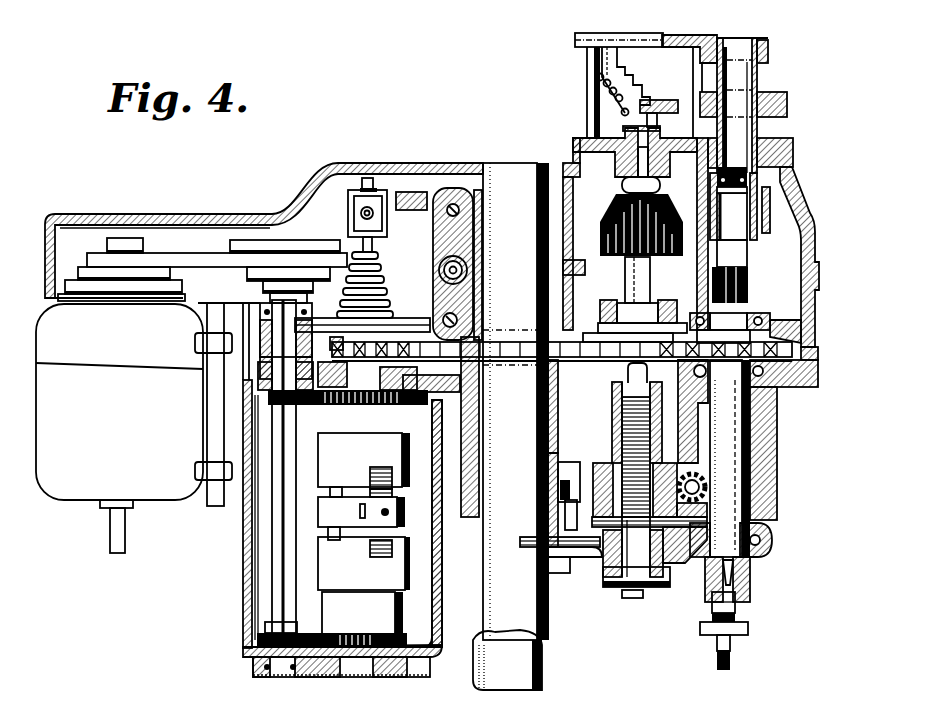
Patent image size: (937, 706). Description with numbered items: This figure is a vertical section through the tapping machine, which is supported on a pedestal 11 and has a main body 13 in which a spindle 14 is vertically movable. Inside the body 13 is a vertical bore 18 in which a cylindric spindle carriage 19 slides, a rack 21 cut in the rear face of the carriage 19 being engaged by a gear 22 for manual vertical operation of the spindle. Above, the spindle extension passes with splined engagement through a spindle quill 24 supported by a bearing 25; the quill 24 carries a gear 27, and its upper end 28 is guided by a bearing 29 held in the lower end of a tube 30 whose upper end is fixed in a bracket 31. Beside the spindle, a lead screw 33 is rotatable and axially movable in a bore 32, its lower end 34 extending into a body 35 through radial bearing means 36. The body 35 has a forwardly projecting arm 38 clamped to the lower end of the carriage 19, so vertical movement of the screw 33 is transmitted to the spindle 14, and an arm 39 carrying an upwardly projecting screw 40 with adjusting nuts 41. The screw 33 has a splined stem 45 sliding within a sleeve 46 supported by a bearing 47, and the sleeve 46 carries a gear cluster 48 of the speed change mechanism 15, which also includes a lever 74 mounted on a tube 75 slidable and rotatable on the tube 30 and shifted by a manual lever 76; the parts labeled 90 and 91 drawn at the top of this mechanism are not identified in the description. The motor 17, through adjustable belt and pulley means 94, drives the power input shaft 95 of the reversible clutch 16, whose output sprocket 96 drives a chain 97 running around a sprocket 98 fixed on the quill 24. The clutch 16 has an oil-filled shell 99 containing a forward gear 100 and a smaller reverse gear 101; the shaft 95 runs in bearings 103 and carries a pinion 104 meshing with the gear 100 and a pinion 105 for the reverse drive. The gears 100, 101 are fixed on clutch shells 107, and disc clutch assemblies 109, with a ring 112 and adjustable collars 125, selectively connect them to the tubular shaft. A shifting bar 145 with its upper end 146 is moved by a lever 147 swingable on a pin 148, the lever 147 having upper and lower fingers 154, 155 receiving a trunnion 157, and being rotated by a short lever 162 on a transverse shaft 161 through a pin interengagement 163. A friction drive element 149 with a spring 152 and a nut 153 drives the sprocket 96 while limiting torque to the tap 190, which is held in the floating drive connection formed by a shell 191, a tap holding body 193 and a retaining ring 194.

The pedestal 11 is at (548, 640).
The main body 13 is at (777, 474).
The spindle 14 is at (760, 568).
The speed change mechanism 15 is at (572, 137).
The reversible clutch 16 is at (232, 527).
The motor 17 is at (119, 428).
The vertical bore 18 is at (592, 196).
The spindle carriage 19 is at (736, 468).
The rack 21 is at (700, 440).
The gear 22 is at (690, 472).
The spindle quill 24 is at (750, 311).
The bearing 25 is at (768, 318).
The gear 27 is at (750, 280).
The upper end of the quill 28 is at (656, 192).
The bearing 29 is at (721, 177).
The tube 30 is at (757, 72).
The bracket 31 is at (766, 37).
The bore 32 is at (612, 399).
The lead screw 33 is at (613, 422).
The lower end of the lead screw 34 is at (627, 563).
The body 35 is at (612, 574).
The radial bearing means 36 is at (607, 569).
The forwardly projecting arm 38 is at (764, 537).
The arm 39 is at (535, 554).
The screw 40 is at (540, 492).
The adjusting nuts 41 is at (540, 512).
The splined stem 45 is at (651, 289).
The sleeve 46 is at (623, 283).
The bearing 47 is at (667, 306).
The gear cluster 48 is at (598, 208).
The lever 74 is at (759, 235).
The tube 75 is at (722, 208).
The lever 76 is at (770, 94).
The cam block 90 is at (663, 100).
The rack 91 is at (596, 88).
The belt and pulley means 94 is at (198, 252).
The power input shaft 95 is at (283, 329).
The output sprocket 96 is at (305, 352).
The drive chain 97 is at (498, 358).
The sprocket 98 is at (795, 374).
The shell 99 is at (240, 596).
The forward gear 100 is at (430, 400).
The reverse gear 101 is at (405, 640).
The bearings 103 is at (262, 382).
The pinion 104 is at (262, 407).
The pinion 105 is at (247, 643).
The clutch shells 107 is at (410, 425).
The disc clutch assemblies 109 is at (412, 460).
The ring 112 is at (334, 500).
The adjustable collars 125 is at (409, 492).
The bar 145 is at (374, 245).
The upper end of the bar 146 is at (368, 178).
The lever 147 is at (411, 192).
The pin 148 is at (455, 196).
The friction drive element 149 is at (401, 320).
The spring 152 is at (382, 286).
The nut 153 is at (380, 268).
The upper fingers 154 is at (348, 192).
The lower fingers 155 is at (352, 226).
The trunnion 157 is at (360, 213).
The transverse shaft 161 is at (470, 304).
The short lever 162 is at (470, 285).
The pin interengagement 163 is at (472, 265).
The tap 190 is at (738, 657).
The shell 191 is at (748, 584).
The tap holding body 193 is at (748, 607).
The retaining ring 194 is at (749, 630).